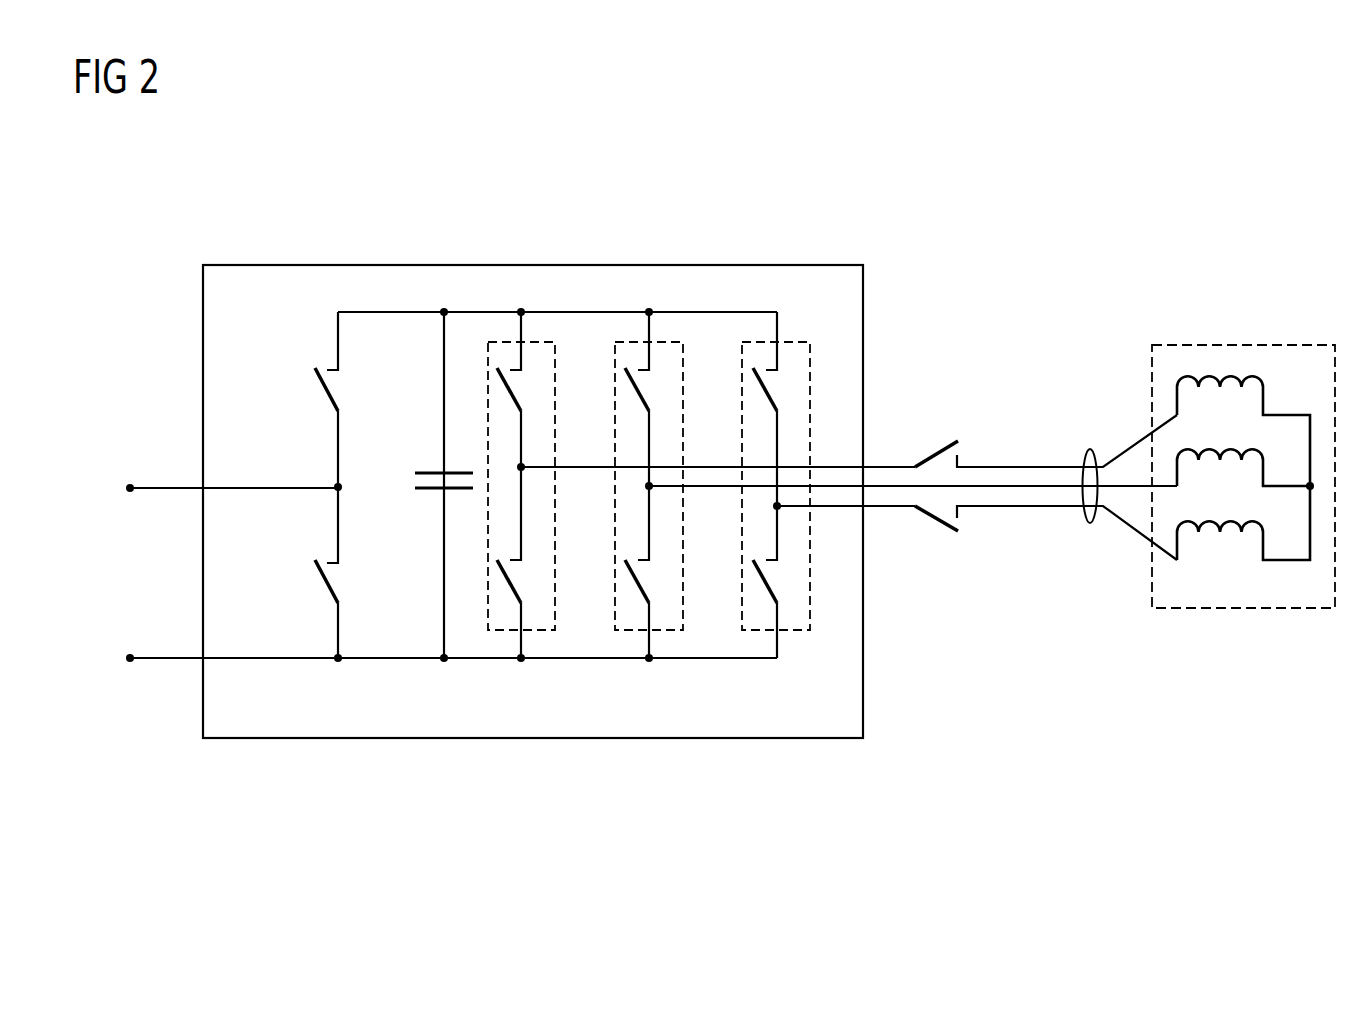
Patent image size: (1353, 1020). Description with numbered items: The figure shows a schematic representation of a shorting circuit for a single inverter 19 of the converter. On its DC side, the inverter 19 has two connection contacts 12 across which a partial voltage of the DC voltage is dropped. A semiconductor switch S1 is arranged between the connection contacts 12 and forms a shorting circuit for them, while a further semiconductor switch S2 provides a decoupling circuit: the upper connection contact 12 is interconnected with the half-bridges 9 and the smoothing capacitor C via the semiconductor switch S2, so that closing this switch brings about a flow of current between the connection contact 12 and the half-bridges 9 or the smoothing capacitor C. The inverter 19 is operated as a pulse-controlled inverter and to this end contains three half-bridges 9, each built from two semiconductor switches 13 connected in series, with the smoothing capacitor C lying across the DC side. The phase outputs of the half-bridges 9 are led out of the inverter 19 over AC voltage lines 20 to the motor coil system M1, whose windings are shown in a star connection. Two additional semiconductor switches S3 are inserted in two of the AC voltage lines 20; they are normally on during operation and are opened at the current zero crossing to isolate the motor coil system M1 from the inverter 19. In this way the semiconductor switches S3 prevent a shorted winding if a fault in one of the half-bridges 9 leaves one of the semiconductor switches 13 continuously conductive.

The connection contact 12 is at (130, 485).
The semiconductor switch S1 is at (327, 586).
The semiconductor switch S2 is at (327, 397).
The smoothing capacitor C is at (433, 491).
The semiconductor switch 13 is at (507, 392).
The half-bridge 9 is at (537, 631).
The inverter 19 is at (566, 265).
The additional semiconductor switch S3 is at (933, 452).
The AC voltage line 20 is at (1090, 448).
The motor coil system M1 is at (1242, 345).